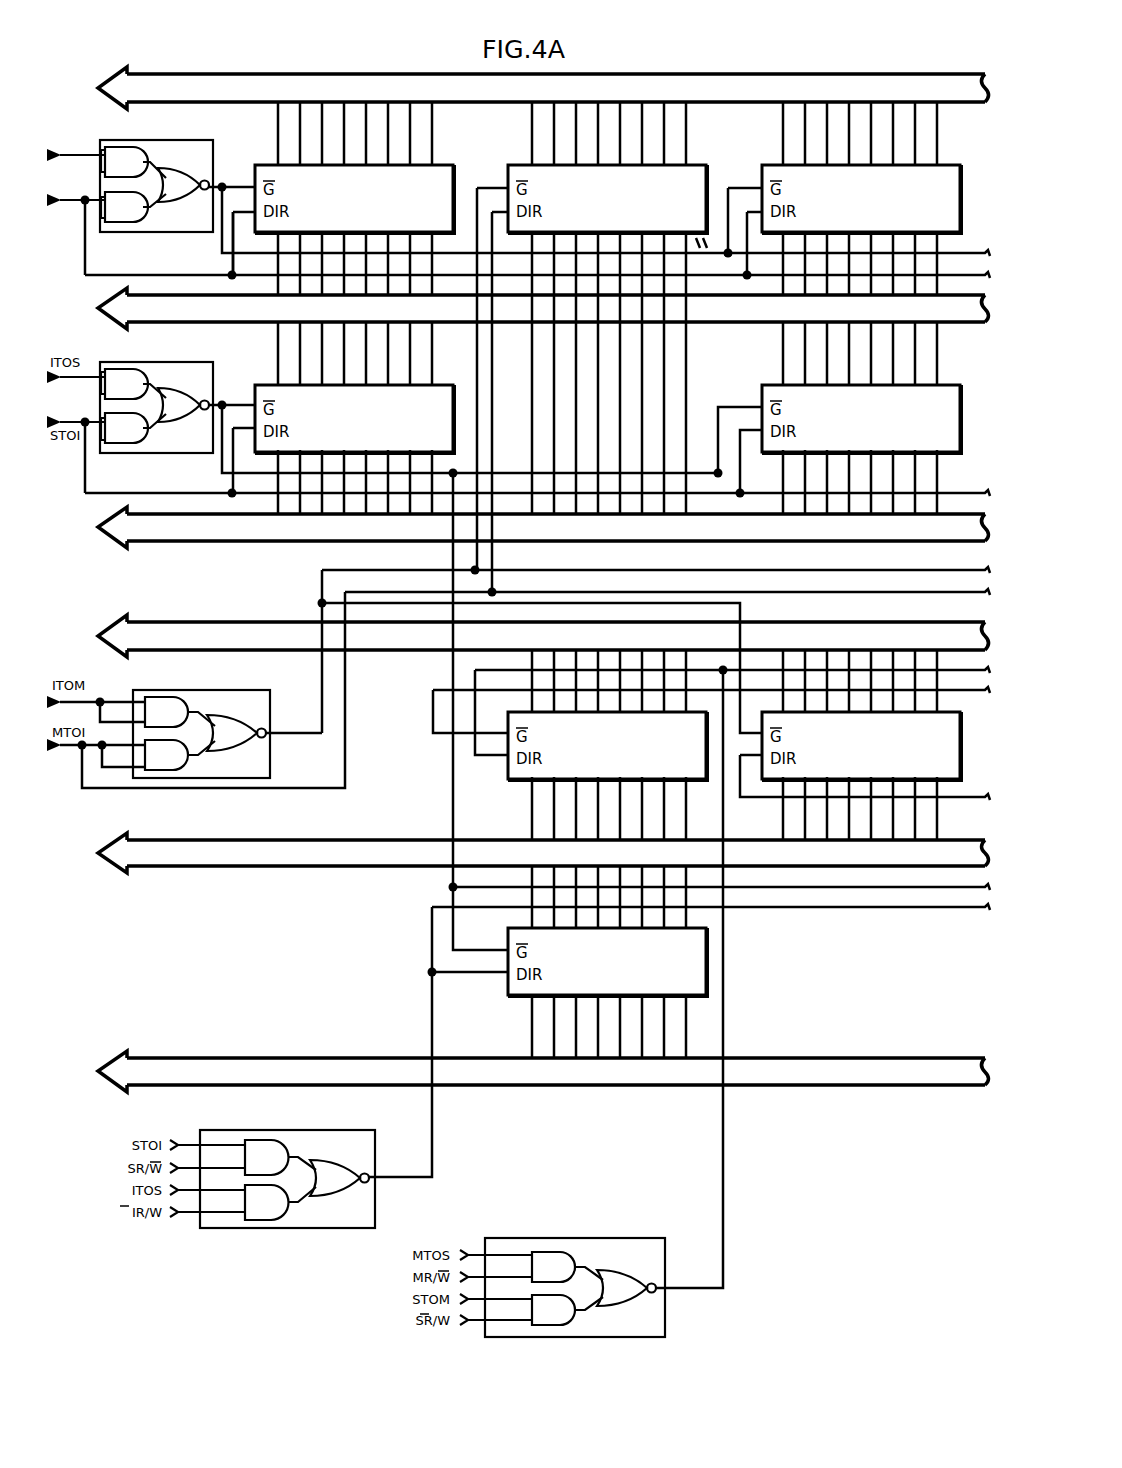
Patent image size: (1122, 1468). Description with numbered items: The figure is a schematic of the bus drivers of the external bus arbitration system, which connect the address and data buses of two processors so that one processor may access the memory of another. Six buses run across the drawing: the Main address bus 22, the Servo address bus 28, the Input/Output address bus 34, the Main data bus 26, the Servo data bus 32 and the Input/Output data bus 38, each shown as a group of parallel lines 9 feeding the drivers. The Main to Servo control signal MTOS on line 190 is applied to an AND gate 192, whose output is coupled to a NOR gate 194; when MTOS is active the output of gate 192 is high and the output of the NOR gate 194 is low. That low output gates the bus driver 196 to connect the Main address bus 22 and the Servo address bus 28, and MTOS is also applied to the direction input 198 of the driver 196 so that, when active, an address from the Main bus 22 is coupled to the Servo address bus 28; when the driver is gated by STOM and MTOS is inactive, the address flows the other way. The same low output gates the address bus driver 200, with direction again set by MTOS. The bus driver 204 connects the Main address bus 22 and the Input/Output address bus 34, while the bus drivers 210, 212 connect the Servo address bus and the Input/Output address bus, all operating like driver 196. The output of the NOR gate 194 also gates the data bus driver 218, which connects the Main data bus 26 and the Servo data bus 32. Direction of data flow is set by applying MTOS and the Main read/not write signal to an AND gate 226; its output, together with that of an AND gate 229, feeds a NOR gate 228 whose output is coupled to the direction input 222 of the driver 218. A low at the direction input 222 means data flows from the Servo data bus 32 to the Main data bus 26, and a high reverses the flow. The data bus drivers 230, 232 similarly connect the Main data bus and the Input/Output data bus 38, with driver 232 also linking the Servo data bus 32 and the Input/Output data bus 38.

The Main address bus 22 is at (339, 74).
The Servo address bus 28 is at (232, 312).
The Input/Output address bus 34 is at (218, 541).
The Main data bus 26 is at (254, 622).
The Servo data bus 32 is at (188, 838).
The Input/Output data bus 38 is at (356, 1060).
The bus lines 9 is at (607, 133).
The line 190 is at (154, 174).
The AND gate 192 is at (150, 206).
The NOR gate 194 is at (188, 172).
The bus driver 196 is at (453, 184).
The direction input 198 is at (245, 220).
The address bus driver 200 is at (773, 164).
The bus driver 204 is at (700, 183).
The bus driver 210 is at (444, 387).
The bus driver 212 is at (762, 387).
The data bus driver 218 is at (688, 756).
The direction input 222 is at (506, 755).
The data bus driver 230 is at (941, 757).
The data bus driver 232 is at (702, 976).
The AND gate 226 is at (543, 1258).
The NOR gate 228 is at (618, 1277).
The AND gate 229 is at (553, 1317).